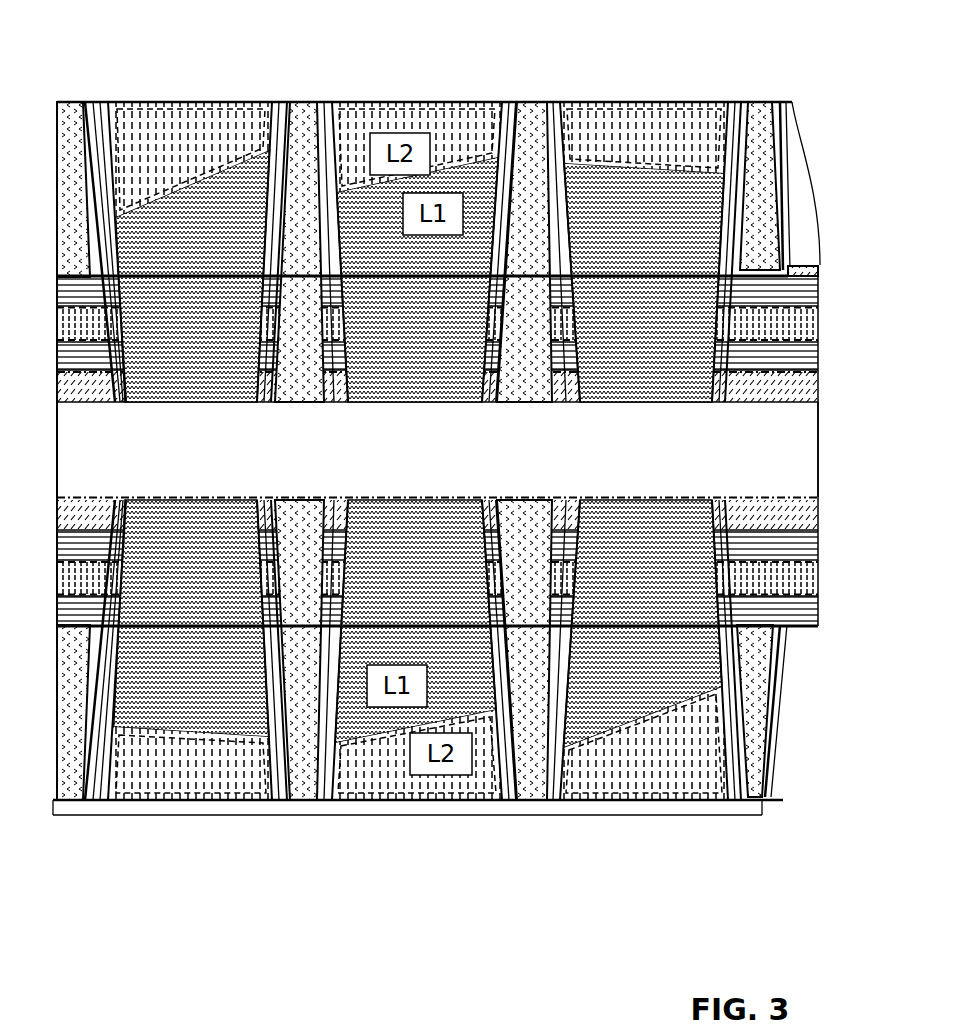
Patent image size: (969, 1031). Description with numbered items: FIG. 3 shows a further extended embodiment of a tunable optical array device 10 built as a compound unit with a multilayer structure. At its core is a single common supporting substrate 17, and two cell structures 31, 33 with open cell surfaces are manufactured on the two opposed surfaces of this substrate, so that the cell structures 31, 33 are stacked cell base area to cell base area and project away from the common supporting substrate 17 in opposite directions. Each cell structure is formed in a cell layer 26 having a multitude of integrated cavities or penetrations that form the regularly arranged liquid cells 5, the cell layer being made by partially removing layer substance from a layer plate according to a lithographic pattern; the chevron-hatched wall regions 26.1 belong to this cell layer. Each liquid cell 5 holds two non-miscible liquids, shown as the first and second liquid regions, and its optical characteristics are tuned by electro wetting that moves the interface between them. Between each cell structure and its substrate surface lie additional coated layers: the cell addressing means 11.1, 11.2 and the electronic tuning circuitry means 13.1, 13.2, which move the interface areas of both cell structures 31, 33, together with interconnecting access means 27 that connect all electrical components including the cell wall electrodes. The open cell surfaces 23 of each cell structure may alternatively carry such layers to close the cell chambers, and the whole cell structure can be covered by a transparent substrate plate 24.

The optical array device 10 is at (182, 46).
The cell layer 26 is at (68, 102).
The insulating spacer 26.1 is at (762, 102).
The liquid cells 5 is at (108, 112).
The cell structure 31 is at (253, 112).
The cell surfaces 23 is at (740, 102).
The interconnecting access means 27 is at (800, 298).
The electronic tuning circuitry means 13.1 is at (800, 333).
The cell addressing means 11.1 is at (800, 398).
The common supporting substrate 17 is at (800, 478).
The cell addressing means 11.2 is at (805, 516).
The electronic tuning circuitry means 13.2 is at (812, 581).
The cell structure 33 is at (583, 772).
The transparent substrate plate 24 is at (645, 807).